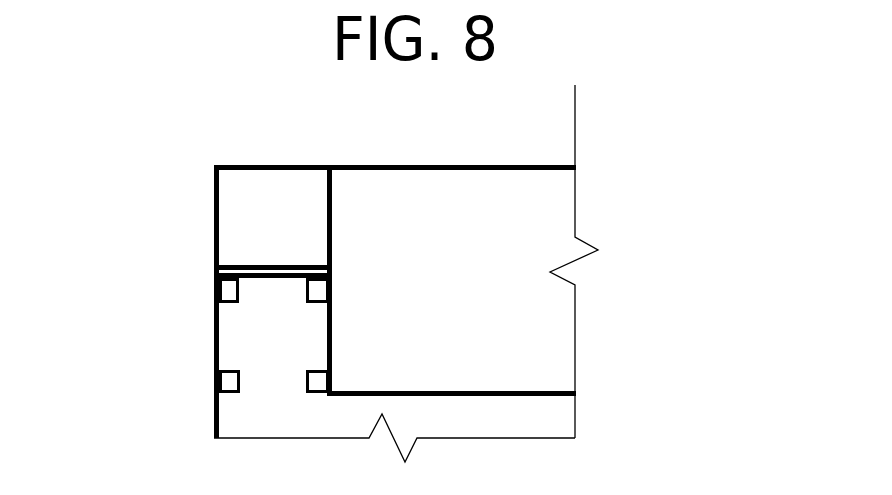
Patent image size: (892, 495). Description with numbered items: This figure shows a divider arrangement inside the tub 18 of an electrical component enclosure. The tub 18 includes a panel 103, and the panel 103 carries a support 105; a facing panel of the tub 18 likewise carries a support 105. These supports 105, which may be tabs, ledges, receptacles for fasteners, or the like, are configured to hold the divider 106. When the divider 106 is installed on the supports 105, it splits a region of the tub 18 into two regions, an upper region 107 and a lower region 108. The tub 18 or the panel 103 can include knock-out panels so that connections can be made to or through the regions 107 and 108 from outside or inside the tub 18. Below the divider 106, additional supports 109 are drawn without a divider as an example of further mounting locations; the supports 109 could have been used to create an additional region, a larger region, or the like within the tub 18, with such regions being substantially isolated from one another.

The tub 18 is at (502, 163).
The panel 103 is at (333, 333).
The support 105 is at (230, 290).
The divider 106 is at (282, 263).
The region 107 is at (273, 192).
The region 108 is at (255, 415).
The additional supports 109 is at (230, 380).